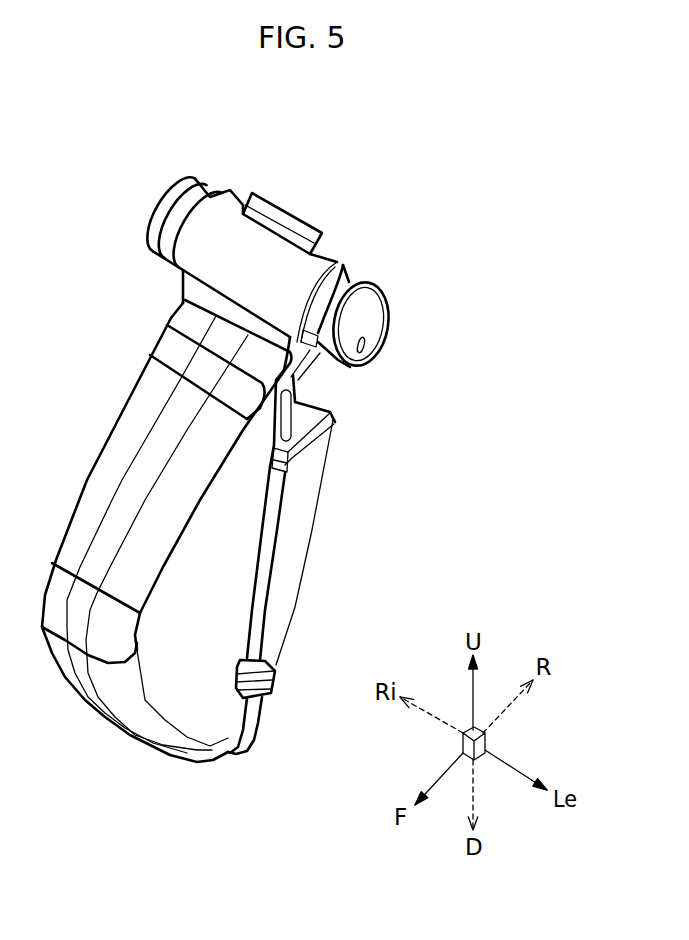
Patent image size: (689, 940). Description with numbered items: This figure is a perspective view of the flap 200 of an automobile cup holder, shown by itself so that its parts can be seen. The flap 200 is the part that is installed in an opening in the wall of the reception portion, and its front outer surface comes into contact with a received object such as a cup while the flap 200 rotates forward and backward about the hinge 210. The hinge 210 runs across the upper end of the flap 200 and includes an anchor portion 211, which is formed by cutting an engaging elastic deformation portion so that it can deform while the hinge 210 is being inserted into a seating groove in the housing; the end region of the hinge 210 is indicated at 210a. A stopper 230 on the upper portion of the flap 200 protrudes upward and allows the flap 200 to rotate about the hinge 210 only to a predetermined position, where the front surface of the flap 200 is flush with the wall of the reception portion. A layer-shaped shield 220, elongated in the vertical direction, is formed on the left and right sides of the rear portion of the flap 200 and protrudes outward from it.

The flap 200 is at (140, 397).
The hinge 210 is at (360, 299).
The key hole 210a is at (370, 360).
The anchor portion 211 is at (213, 193).
The shield 220 is at (278, 560).
The stopper 230 is at (283, 208).